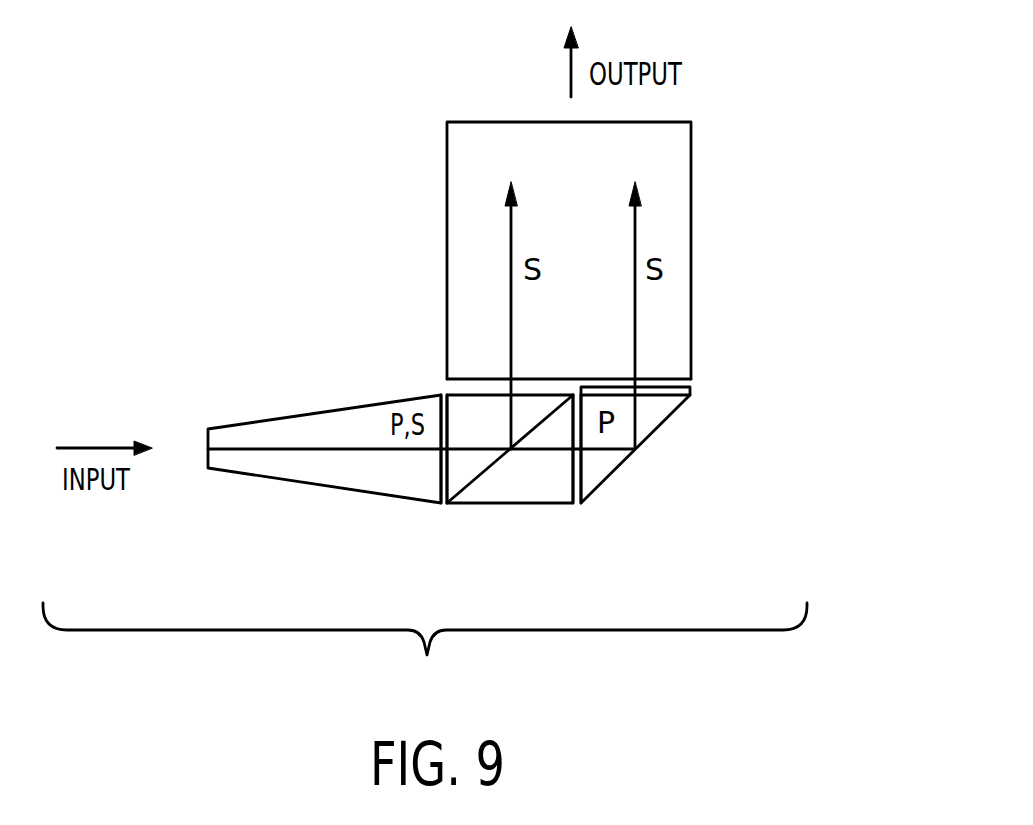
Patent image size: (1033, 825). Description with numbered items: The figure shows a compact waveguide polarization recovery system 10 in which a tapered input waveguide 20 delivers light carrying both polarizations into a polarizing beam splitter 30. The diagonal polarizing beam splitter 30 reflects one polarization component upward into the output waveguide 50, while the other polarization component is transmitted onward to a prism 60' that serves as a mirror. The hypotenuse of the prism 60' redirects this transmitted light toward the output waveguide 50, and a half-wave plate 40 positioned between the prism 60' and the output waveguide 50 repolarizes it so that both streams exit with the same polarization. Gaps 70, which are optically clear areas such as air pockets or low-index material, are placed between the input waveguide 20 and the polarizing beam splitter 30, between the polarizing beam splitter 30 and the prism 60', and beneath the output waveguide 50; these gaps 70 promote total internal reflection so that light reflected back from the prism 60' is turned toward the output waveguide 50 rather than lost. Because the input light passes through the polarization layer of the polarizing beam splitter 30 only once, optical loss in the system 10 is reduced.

The waveguide polarization recovery system 10 is at (425, 652).
The input waveguide 20 is at (325, 490).
The polarizing beam splitter 30 is at (510, 455).
The half-wave plate 40 is at (691, 395).
The output waveguide 50 is at (691, 288).
The prism 60' is at (635, 468).
The gap 70 is at (445, 387).